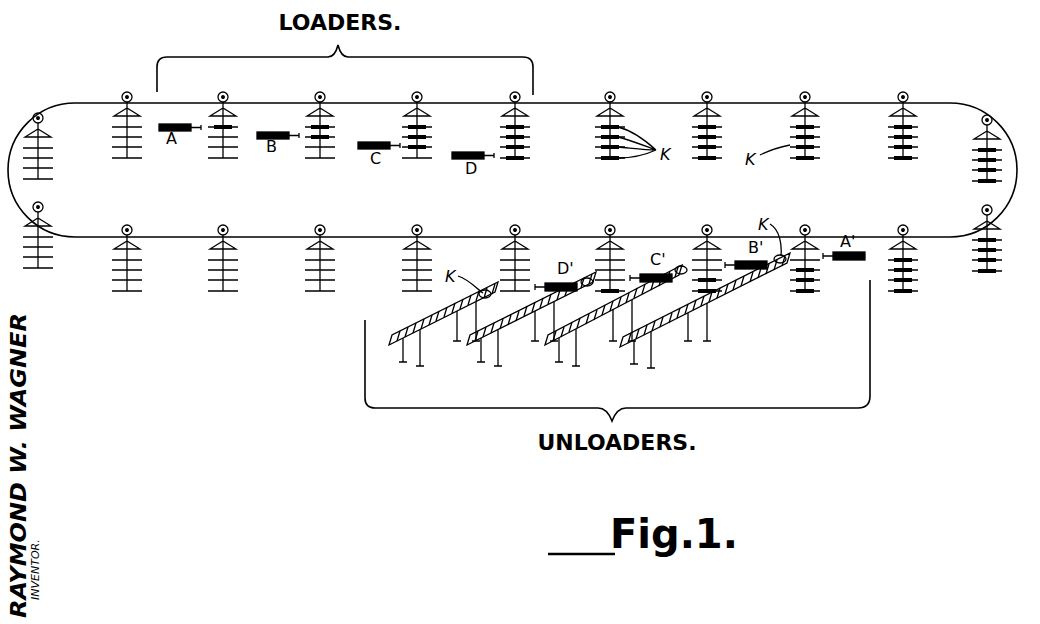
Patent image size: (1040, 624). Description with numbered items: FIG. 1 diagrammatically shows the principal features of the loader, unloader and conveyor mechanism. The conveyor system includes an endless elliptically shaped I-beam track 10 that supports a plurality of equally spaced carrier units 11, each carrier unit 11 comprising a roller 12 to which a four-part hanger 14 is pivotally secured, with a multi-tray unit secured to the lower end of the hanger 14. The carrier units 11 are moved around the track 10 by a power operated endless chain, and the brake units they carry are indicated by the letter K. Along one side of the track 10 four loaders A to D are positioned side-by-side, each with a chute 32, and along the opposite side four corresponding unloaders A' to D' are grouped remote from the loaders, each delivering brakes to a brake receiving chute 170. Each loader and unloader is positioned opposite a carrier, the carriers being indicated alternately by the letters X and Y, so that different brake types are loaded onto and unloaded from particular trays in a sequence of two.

The endless elliptically shaped I-beam track 10 is at (658, 103).
The carrier unit 11 is at (512, 181).
The roller 12 is at (617, 100).
The four-part hanger 14 is at (608, 113).
The chute 32 is at (435, 336).
The brake receiving chute 170 is at (505, 338).